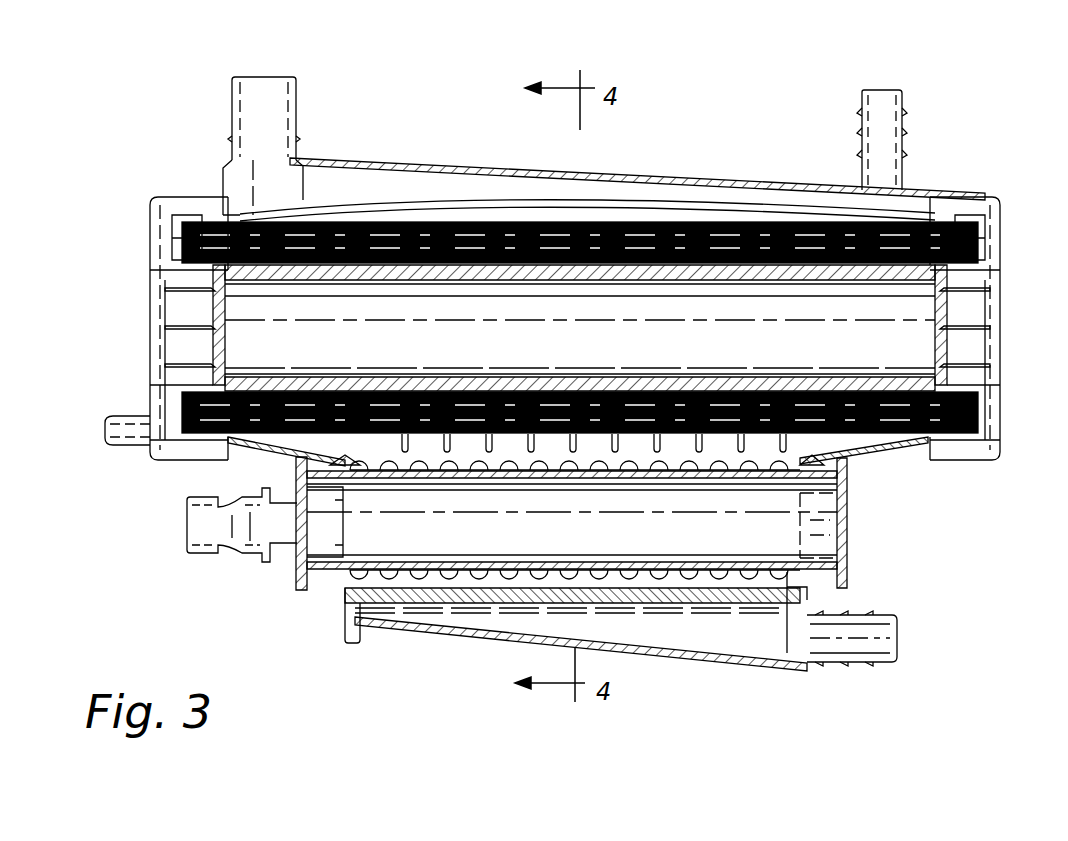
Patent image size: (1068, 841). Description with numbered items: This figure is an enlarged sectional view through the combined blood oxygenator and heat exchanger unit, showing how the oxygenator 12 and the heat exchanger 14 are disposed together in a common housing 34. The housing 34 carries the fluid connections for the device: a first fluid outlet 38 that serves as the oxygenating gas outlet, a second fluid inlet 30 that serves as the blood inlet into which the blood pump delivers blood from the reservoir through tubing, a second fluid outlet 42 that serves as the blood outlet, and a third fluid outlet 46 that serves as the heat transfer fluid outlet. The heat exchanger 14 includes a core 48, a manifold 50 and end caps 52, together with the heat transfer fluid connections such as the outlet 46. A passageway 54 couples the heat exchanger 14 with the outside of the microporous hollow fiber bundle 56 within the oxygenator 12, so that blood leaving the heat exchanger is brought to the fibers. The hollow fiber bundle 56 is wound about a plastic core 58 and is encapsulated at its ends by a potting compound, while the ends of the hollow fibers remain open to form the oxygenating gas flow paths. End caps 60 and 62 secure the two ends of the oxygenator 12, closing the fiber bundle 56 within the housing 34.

The oxygenator 12 is at (759, 178).
The heat exchanger 14 is at (757, 668).
The second fluid inlet 30 is at (895, 640).
The housing 34 is at (483, 170).
The first fluid outlet 38 is at (108, 433).
The second fluid outlet 42 is at (280, 76).
The third fluid outlet 46 is at (187, 532).
The core 48 is at (345, 592).
The manifold 50 is at (767, 558).
The end caps 52 is at (297, 570).
The passageway 54 is at (350, 563).
The hollow fiber bundle 56 is at (365, 235).
The plastic core 58 is at (655, 225).
The end cap 60 is at (1000, 226).
The end cap 62 is at (148, 222).